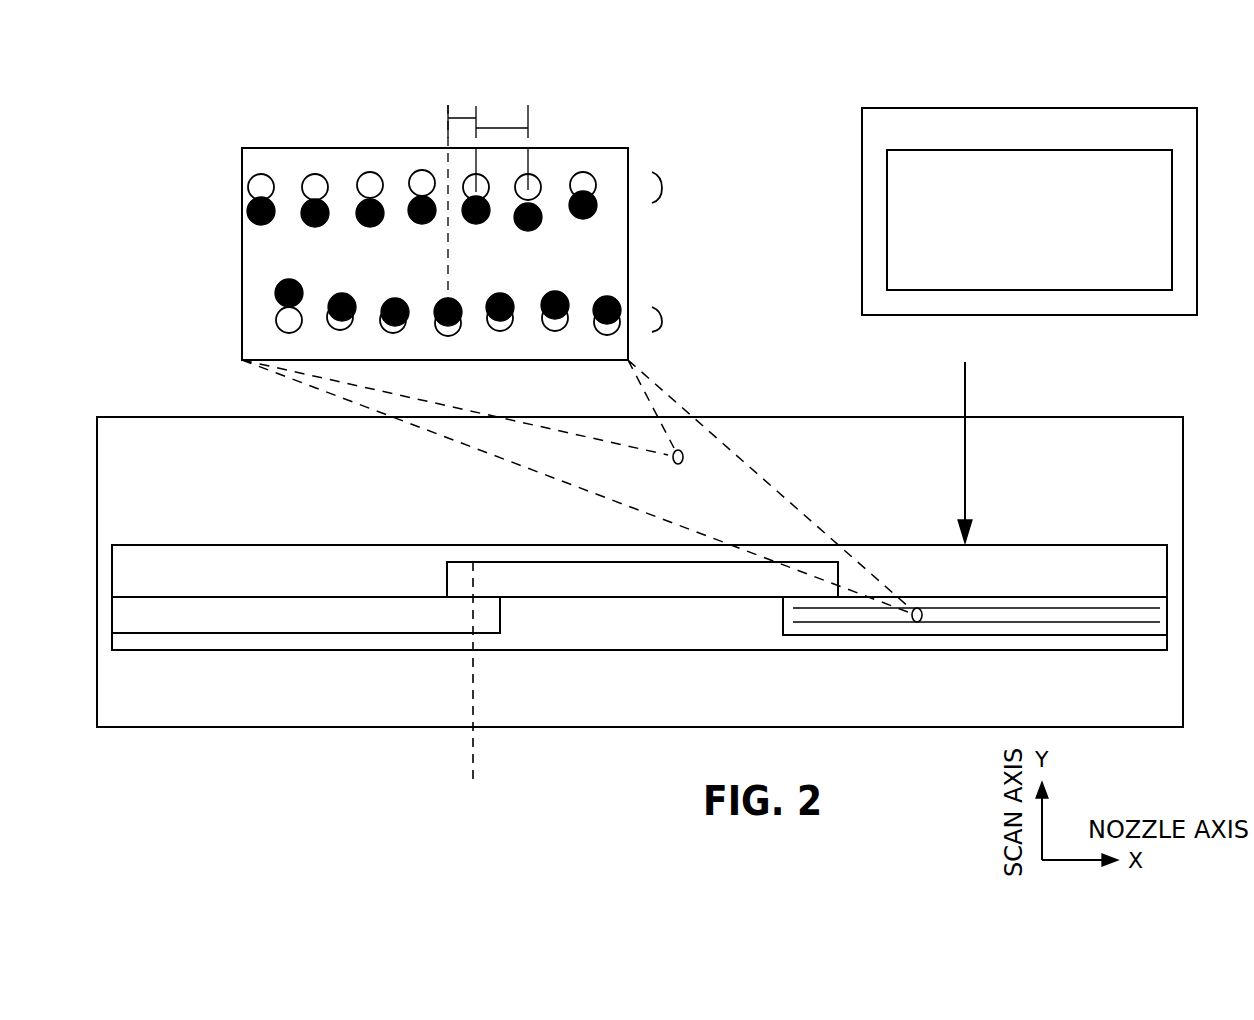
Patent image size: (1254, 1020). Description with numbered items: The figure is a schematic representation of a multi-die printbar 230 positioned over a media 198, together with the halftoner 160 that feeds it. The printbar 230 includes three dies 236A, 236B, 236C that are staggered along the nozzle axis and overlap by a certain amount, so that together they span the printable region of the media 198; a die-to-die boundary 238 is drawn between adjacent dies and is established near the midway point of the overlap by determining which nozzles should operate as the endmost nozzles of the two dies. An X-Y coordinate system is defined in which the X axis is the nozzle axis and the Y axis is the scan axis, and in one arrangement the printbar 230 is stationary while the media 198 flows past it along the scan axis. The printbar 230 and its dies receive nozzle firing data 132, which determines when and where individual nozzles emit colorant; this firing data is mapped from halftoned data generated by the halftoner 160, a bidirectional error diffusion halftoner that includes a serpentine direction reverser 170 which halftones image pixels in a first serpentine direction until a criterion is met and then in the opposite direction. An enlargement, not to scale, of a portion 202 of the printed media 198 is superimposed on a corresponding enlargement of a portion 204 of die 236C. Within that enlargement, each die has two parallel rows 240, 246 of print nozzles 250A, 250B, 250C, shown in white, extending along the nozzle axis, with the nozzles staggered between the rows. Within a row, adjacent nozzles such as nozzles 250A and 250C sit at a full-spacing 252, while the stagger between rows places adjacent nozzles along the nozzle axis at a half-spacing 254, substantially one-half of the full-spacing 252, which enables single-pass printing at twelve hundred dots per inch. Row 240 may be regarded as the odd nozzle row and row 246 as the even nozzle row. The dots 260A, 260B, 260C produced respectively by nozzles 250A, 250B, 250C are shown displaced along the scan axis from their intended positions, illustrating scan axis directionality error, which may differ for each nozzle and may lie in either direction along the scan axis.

The print nozzle 250A is at (258, 174).
The print nozzle 250B is at (276, 323).
The print nozzle 250C is at (314, 174).
The dot 260A is at (250, 202).
The dot 260B is at (276, 295).
The dot 260C is at (308, 228).
The half-spacing 254 is at (462, 116).
The full-spacing 252 is at (500, 127).
The row of print nozzles 240 is at (662, 188).
The row of print nozzles 246 is at (662, 322).
The halftoner 160 is at (1029, 211).
The serpentine direction reverser 170 is at (1029, 220).
The nozzle firing data 132 is at (965, 395).
The media 198 is at (640, 572).
The printbar 230 is at (639, 597).
The die 236A is at (355, 634).
The die 236B is at (553, 561).
The die 236C is at (993, 597).
The die-to-die boundary 238 is at (475, 744).
The portion of the printed media 202 is at (686, 476).
The portion of the die 204 is at (923, 590).